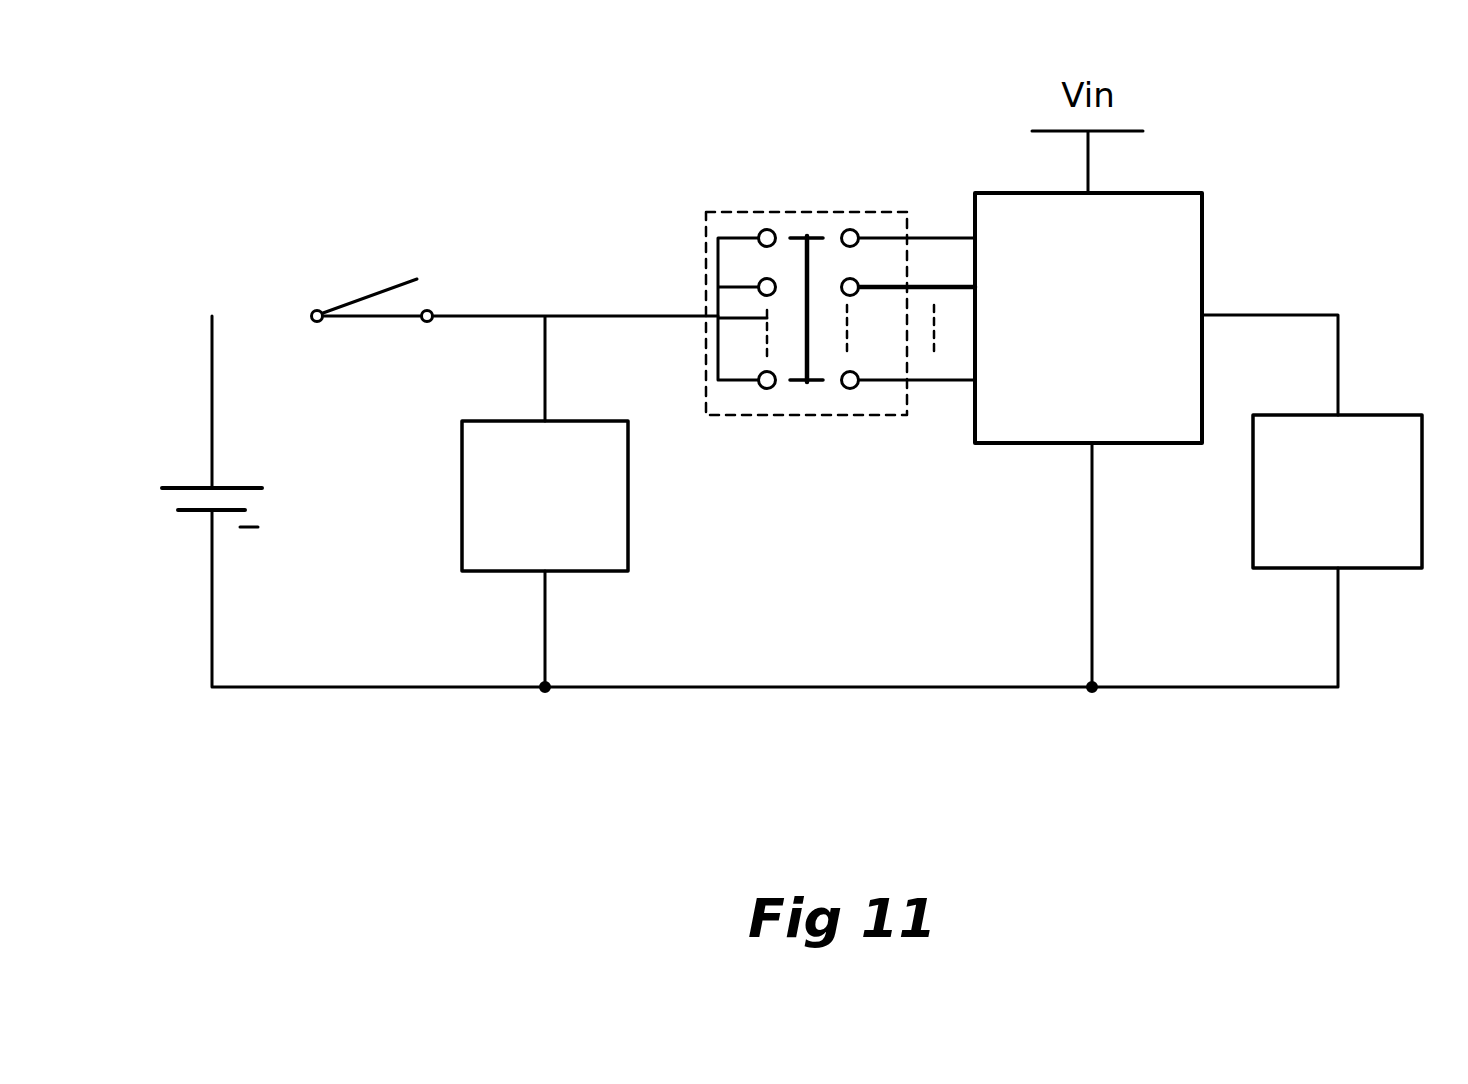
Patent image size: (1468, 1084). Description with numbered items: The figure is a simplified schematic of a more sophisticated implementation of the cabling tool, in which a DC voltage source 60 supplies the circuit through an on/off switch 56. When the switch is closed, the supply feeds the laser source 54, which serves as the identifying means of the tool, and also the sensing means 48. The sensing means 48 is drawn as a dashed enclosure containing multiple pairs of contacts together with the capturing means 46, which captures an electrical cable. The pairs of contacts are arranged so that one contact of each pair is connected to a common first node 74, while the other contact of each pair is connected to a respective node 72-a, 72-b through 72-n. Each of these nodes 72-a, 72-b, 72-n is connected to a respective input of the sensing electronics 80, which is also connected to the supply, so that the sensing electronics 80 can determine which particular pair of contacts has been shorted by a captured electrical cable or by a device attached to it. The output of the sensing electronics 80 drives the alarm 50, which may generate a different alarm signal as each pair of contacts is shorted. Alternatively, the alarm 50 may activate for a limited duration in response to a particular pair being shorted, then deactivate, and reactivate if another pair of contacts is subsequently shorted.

The DC voltage source 60 is at (188, 462).
The on/off switch 56 is at (360, 278).
The laser source 54 is at (630, 525).
The sensing means 48 is at (782, 182).
The first node 74 is at (716, 316).
The capturing means 46 is at (808, 233).
The node 72-a is at (854, 231).
The node 72-b is at (856, 293).
The node 72-n is at (853, 389).
The sensing electronics 80 is at (1205, 287).
The alarm 50 is at (1388, 415).